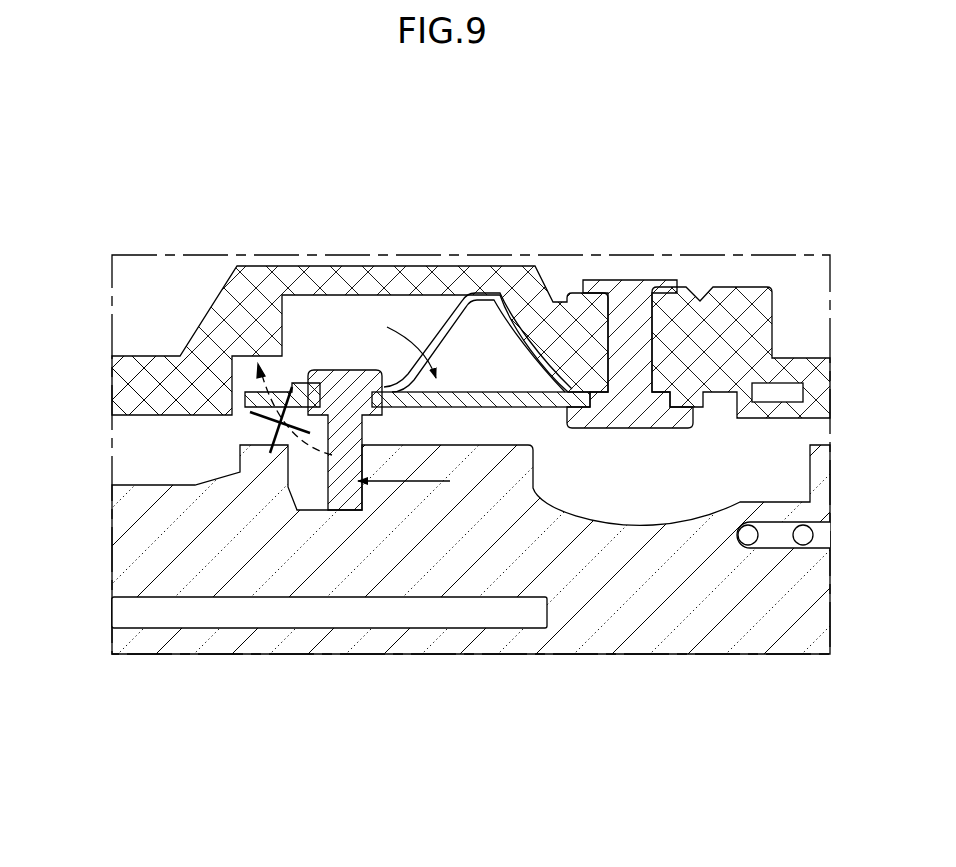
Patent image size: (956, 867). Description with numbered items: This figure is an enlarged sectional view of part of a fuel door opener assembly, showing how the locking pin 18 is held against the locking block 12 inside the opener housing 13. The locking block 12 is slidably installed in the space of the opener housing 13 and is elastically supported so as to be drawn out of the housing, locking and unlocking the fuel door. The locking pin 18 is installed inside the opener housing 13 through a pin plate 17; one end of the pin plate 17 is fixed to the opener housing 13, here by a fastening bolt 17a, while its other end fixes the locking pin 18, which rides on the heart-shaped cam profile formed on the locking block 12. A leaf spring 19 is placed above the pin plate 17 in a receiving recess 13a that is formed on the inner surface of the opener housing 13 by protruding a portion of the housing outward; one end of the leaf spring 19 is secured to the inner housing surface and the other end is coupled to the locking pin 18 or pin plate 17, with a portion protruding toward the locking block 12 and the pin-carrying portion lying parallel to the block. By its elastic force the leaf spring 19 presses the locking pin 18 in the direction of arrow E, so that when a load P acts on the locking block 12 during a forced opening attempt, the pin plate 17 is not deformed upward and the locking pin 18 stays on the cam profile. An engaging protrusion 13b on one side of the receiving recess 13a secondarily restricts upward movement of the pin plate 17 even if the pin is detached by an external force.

The locking block 12 is at (423, 560).
The opener housing 13 is at (745, 317).
The receiving recess 13a is at (340, 321).
The engaging protrusion 13b is at (250, 357).
The pin plate 17 is at (483, 400).
The fastening bolt 17a is at (625, 298).
The locking pin 18 is at (343, 488).
The leaf spring 19 is at (438, 318).
The arrow E is at (404, 352).
The load P is at (414, 479).